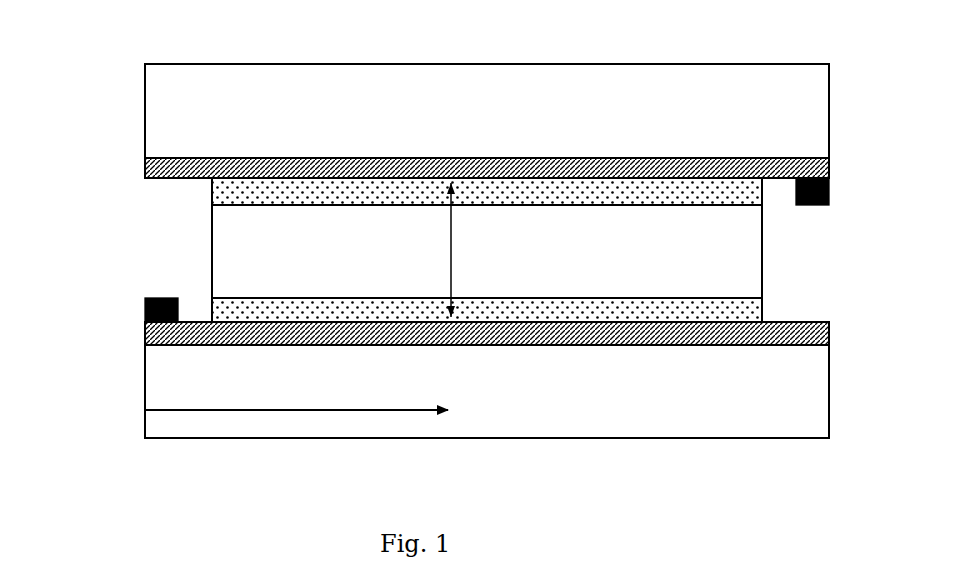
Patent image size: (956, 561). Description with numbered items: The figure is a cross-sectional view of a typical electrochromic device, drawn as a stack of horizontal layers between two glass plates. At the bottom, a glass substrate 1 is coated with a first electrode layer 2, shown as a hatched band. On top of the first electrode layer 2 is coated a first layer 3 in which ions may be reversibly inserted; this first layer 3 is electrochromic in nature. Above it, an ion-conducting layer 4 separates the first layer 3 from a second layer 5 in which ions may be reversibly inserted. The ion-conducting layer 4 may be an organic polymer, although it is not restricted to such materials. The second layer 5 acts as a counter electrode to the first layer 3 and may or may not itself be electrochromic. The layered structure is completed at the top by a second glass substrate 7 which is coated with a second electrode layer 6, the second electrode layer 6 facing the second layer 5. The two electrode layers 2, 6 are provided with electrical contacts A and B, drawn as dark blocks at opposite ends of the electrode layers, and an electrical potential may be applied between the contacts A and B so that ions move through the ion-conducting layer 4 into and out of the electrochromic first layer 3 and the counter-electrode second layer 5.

The glass substrate 1 is at (168, 373).
The first electrode layer 2 is at (165, 335).
The first layer in which ions may be reversibly inserted 3 is at (765, 310).
The ion-conducting layer 4 is at (230, 242).
The second layer in which ions may be reversibly inserted 5 is at (210, 190).
The second electrode layer 6 is at (160, 165).
The second glass substrate 7 is at (168, 105).
The electrical contact A is at (142, 315).
The electrical contact B is at (830, 195).